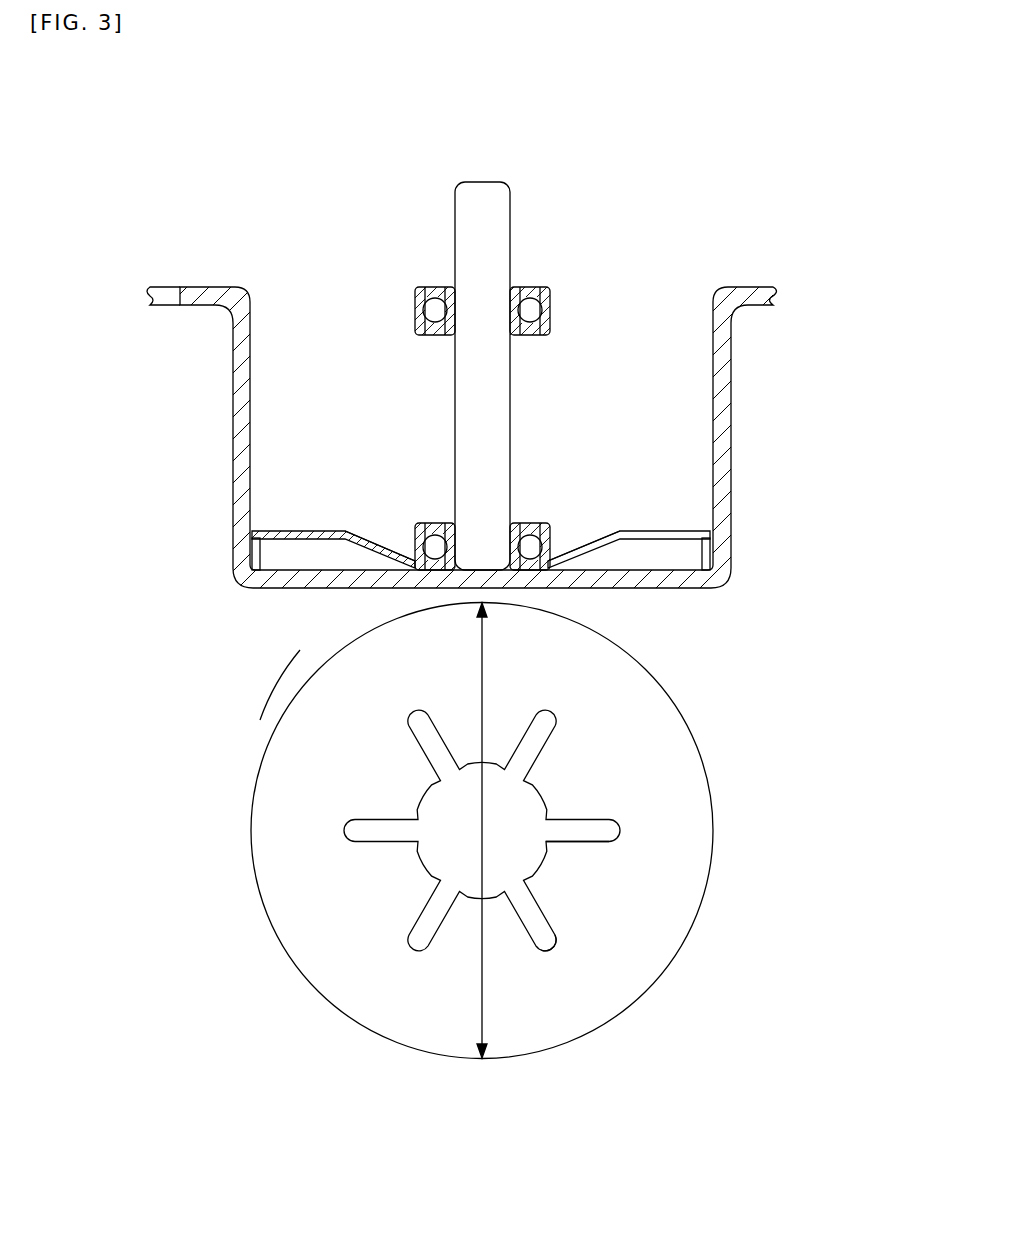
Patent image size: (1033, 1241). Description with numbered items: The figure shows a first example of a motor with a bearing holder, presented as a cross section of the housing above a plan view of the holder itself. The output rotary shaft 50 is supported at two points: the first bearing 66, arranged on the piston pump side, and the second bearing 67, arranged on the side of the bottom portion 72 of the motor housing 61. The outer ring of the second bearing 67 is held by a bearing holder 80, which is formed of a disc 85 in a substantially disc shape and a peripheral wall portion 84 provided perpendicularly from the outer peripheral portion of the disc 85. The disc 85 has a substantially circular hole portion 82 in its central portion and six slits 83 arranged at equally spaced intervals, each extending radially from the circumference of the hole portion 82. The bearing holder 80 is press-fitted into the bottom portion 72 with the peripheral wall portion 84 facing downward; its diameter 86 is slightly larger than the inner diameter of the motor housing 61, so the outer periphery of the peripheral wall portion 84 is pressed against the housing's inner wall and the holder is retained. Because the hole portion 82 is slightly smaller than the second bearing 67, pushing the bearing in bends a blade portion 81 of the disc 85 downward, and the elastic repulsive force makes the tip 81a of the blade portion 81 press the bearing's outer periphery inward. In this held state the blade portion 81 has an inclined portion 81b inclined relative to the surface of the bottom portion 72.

The output rotary shaft 50 is at (510, 217).
The first bearing 66 is at (528, 287).
The second bearing 67 is at (530, 560).
The motor housing 61 is at (731, 398).
The bottom portion 72 is at (655, 568).
The bearing holder 80 is at (474, 669).
The blade portion 81 is at (563, 868).
The tip 81a is at (548, 840).
The inclined portion 81b is at (573, 540).
The hole portion 82 is at (500, 823).
The slits 83 is at (547, 930).
The peripheral wall portion 84 is at (456, 831).
The disc 85 is at (337, 717).
The diameter 86 is at (467, 830).